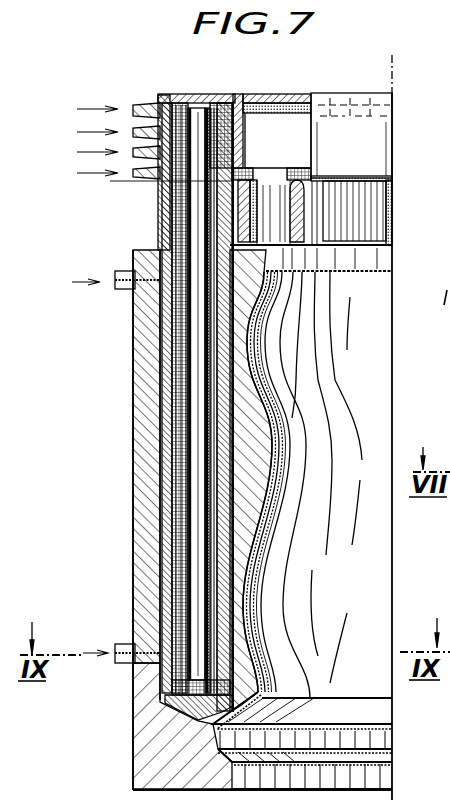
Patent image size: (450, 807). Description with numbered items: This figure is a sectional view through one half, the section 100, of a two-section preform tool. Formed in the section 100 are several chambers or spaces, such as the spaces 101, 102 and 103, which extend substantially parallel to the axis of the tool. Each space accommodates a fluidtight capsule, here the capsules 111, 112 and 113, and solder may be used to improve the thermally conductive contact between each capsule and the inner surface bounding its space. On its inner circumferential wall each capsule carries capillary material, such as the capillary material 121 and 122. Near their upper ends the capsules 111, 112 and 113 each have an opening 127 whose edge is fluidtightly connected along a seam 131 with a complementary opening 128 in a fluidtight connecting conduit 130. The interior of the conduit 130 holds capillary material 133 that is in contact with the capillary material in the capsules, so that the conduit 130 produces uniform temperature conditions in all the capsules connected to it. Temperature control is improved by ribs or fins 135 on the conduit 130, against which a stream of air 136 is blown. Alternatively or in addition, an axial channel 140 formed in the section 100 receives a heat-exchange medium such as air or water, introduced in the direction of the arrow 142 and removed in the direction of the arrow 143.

The section 100 is at (117, 483).
The space 101 is at (150, 730).
The space 102 is at (268, 194).
The space 103 is at (398, 205).
The capsule 111 is at (166, 530).
The capsule 112 is at (307, 207).
The capsule 113 is at (373, 233).
The capillary material 121 is at (166, 564).
The capillary material 122 is at (258, 481).
The opening 127 is at (168, 195).
The complementary opening 128 is at (178, 212).
The connecting conduit 130 is at (325, 90).
The seam 131 is at (156, 172).
The capillary material 133 is at (252, 96).
The ribs or fins 135 is at (158, 103).
The stream of air 136 is at (80, 173).
The axial channel 140 is at (148, 395).
The arrow 142 is at (90, 658).
The arrow 143 is at (97, 285).